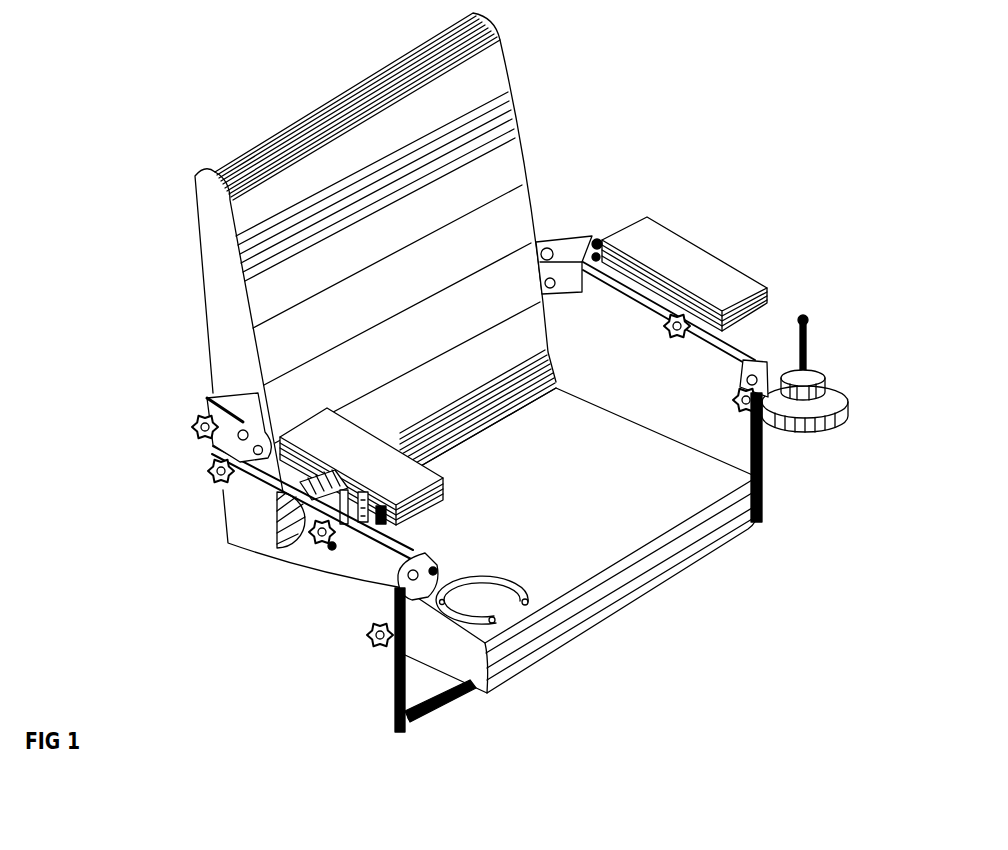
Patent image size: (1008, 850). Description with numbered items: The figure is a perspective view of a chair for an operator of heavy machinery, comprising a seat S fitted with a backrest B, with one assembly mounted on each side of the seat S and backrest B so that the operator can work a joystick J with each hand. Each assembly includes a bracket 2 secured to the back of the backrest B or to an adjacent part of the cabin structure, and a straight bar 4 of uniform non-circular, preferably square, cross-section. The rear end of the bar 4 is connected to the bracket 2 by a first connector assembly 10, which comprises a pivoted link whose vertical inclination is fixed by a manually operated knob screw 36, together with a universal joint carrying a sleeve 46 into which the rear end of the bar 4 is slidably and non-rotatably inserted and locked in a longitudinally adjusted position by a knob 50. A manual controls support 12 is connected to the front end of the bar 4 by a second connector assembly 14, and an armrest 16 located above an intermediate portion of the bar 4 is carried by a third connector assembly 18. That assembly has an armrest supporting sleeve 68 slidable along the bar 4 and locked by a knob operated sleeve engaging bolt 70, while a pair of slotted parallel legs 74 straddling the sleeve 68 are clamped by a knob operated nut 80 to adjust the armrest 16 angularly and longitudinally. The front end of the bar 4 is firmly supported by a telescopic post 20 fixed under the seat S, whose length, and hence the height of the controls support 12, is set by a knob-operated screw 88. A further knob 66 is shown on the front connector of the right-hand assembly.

The backrest B is at (493, 100).
The seat S is at (637, 573).
The joystick J is at (814, 343).
The bracket 2 is at (207, 398).
The bar 4 is at (432, 537).
The first connector assembly 10 is at (198, 455).
The manual controls support 12 is at (505, 581).
The second connector assembly 14 is at (432, 556).
The armrest 16 is at (330, 432).
The third connector assembly 18 is at (362, 545).
The post 20 is at (395, 672).
The knob screw 36 is at (198, 426).
The sleeve 46 is at (218, 460).
The knob 50 is at (217, 478).
The locking knob 66 is at (746, 408).
The armrest supporting sleeve 68 is at (324, 548).
The knob operated sleeve engaging bolt 70 is at (318, 538).
The legs 74 is at (290, 527).
The knob operated nut 80 is at (398, 533).
The knob-operated screw 88 is at (372, 642).